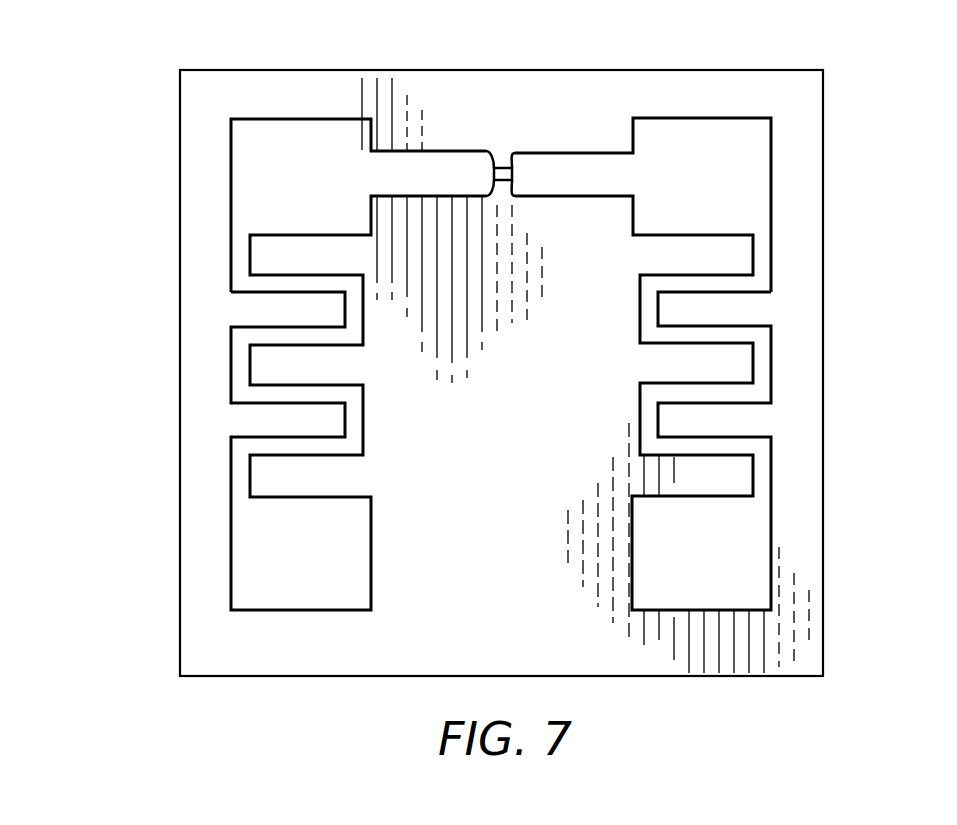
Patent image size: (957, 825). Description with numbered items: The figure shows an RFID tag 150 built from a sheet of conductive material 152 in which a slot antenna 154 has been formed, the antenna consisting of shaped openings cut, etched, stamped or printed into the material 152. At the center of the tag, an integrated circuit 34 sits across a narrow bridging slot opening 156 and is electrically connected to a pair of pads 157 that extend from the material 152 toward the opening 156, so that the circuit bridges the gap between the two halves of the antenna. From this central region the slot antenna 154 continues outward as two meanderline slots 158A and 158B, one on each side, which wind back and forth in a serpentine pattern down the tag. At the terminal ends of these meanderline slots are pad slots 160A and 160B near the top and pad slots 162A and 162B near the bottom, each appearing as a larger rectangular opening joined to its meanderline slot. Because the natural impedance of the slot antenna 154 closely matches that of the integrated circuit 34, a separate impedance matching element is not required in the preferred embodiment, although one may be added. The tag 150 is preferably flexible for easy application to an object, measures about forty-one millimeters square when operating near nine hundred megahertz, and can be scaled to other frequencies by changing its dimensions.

The tag 150 is at (130, 368).
The conductive material 152 is at (612, 662).
The slot antenna 154 is at (294, 130).
The bridging slot opening 156 is at (420, 173).
The pads 157 is at (515, 160).
The integrated circuit 34 is at (494, 173).
The pad slot 160A is at (260, 172).
The pad slot 160B is at (753, 187).
The meanderline slot 158A is at (763, 367).
The meanderline slot 158B is at (240, 284).
The pad slot 162A is at (293, 565).
The pad slot 162B is at (747, 538).